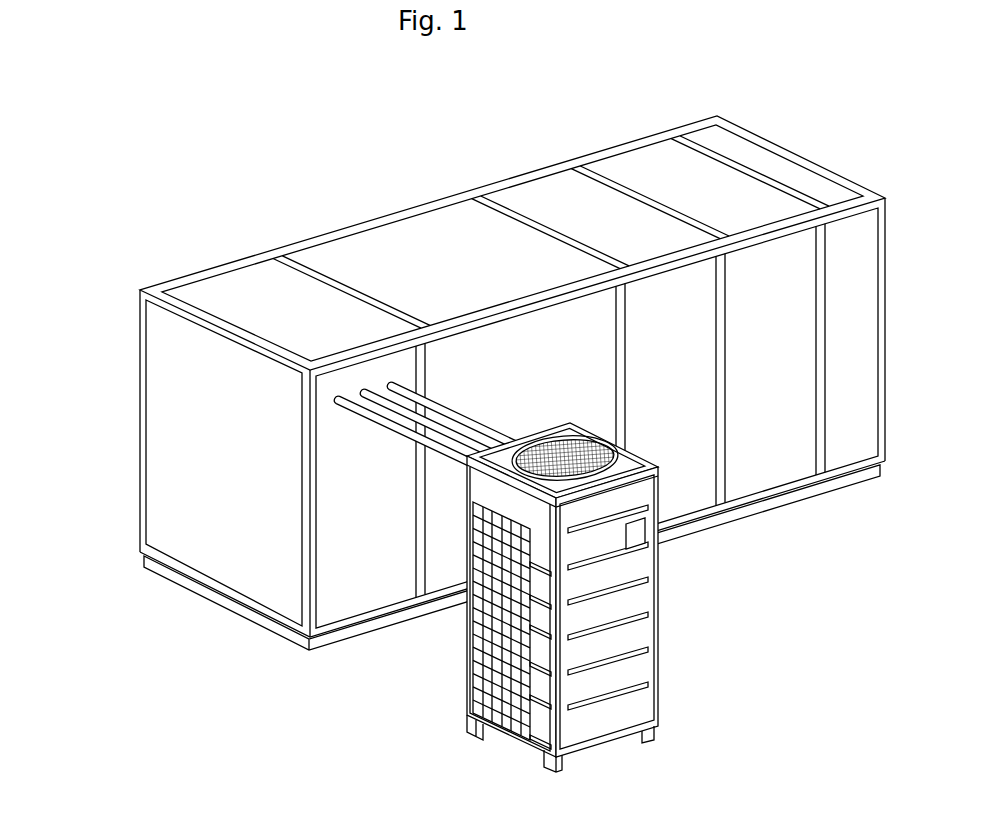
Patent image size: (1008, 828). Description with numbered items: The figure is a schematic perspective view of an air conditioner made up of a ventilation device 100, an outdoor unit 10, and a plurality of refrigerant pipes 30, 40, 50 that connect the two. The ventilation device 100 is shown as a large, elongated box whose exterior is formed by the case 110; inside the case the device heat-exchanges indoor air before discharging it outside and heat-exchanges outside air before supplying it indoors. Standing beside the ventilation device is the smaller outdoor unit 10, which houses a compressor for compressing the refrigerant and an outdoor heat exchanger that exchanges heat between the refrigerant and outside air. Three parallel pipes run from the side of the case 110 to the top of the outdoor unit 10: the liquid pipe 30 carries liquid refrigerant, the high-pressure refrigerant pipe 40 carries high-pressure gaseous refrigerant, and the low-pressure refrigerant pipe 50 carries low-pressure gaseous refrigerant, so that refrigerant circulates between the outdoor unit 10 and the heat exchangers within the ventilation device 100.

The ventilation device 100 is at (202, 268).
The case 110 is at (237, 557).
The outdoor unit 10 is at (681, 680).
The liquid pipe 30 is at (393, 428).
The high-pressure refrigerant pipe 40 is at (393, 410).
The low-pressure refrigerant pipe 50 is at (448, 413).